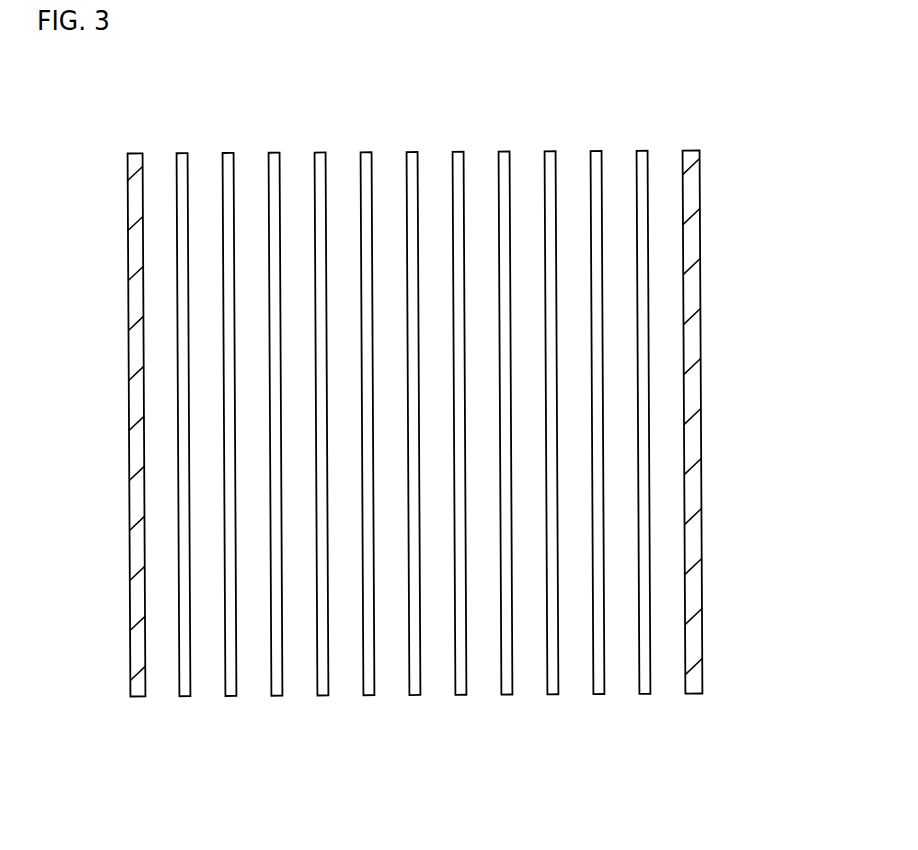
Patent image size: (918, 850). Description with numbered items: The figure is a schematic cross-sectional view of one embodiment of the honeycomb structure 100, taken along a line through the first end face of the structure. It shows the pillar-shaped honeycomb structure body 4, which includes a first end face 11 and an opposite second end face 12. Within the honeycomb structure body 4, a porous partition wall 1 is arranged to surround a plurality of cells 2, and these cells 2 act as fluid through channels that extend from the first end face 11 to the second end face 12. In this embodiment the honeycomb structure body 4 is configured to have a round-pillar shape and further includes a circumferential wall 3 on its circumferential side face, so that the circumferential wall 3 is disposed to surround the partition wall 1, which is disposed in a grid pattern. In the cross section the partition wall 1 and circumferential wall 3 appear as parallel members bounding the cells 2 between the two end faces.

The honeycomb structure 100 is at (784, 57).
The porous partition wall 1 is at (597, 177).
The cells 2 is at (525, 212).
The circumferential wall 3 is at (130, 328).
The honeycomb structure body 4 is at (709, 156).
The first end face 11 is at (150, 135).
The second end face 12 is at (169, 714).